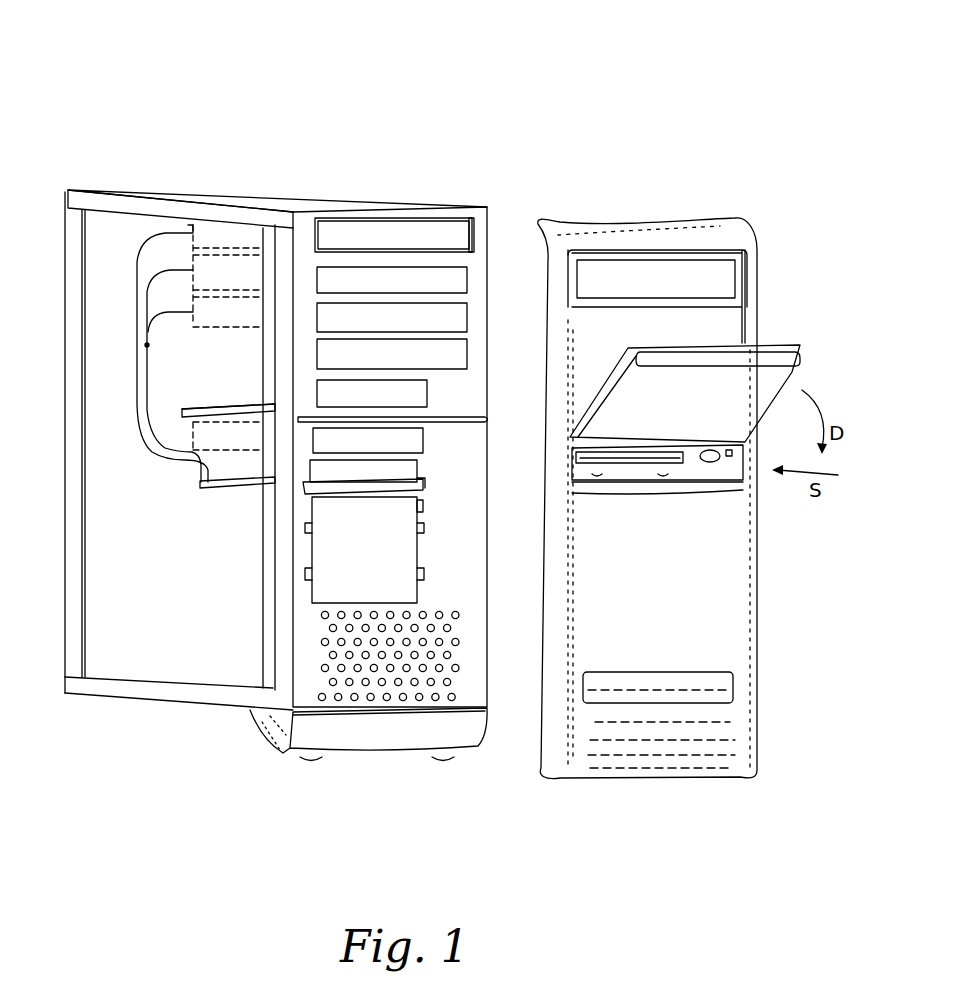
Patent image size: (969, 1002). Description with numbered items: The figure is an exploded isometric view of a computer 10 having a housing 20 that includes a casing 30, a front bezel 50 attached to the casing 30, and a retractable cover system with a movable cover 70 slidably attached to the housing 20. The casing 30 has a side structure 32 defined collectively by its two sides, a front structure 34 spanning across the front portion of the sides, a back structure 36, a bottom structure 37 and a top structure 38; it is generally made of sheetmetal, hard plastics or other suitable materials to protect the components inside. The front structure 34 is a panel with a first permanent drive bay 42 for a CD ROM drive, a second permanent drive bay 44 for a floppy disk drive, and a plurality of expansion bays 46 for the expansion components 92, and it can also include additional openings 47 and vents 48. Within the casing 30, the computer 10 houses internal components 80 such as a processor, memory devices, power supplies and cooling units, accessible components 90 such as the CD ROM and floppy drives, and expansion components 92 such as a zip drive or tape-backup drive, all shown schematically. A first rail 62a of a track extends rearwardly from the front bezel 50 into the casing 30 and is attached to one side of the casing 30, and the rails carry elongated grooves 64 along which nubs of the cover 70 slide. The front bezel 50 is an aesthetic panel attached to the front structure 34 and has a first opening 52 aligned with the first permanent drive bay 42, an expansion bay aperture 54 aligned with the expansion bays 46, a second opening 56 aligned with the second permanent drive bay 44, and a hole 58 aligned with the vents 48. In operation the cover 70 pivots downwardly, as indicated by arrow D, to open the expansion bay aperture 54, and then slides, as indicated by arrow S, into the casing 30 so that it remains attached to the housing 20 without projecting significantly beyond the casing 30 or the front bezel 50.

The computer 10 is at (432, 68).
The housing 20 is at (805, 177).
The casing 30 is at (453, 203).
The side structure 32 is at (240, 207).
The front structure 34 is at (482, 218).
The back structure 36 is at (102, 229).
The bottom structure 37 is at (187, 708).
The top structure 38 is at (153, 196).
The first permanent drive bay 42 is at (470, 232).
The second permanent drive bay 44 is at (423, 440).
The expansion bays 46 is at (427, 398).
The additional openings 47 is at (422, 508).
The vents 48 is at (453, 598).
The front bezel 50 is at (727, 222).
The first opening 52 is at (735, 272).
The expansion bay aperture 54 is at (746, 327).
The second opening 56 is at (630, 463).
The hole 58 is at (637, 672).
The first rail 62a is at (180, 410).
The elongated grooves 64 is at (470, 418).
The cover 70 is at (787, 368).
The internal components 80 is at (345, 497).
The accessible components 90 is at (180, 210).
The expansion components 92 is at (192, 253).